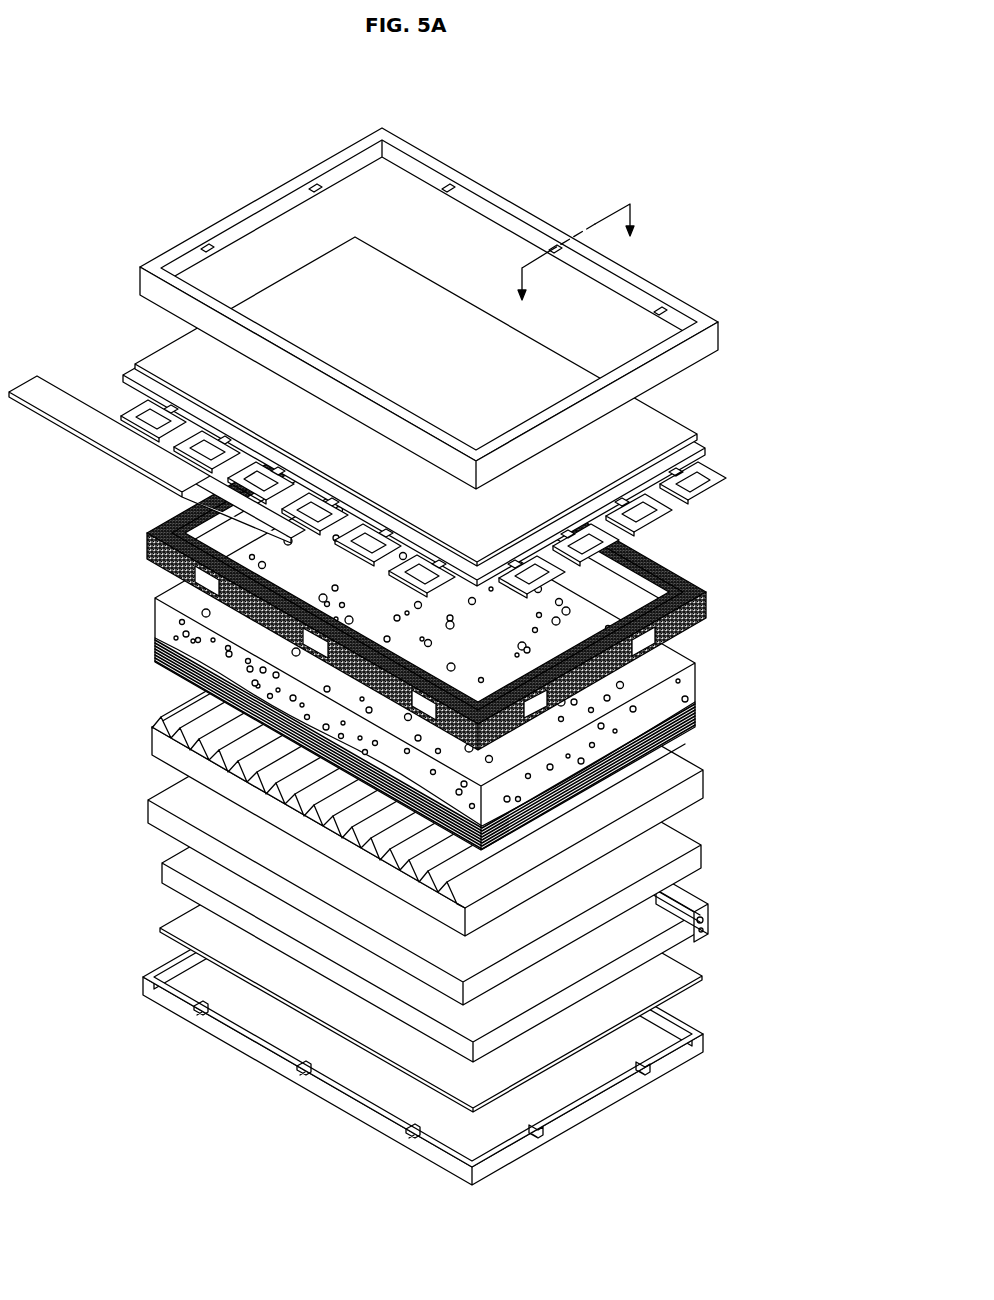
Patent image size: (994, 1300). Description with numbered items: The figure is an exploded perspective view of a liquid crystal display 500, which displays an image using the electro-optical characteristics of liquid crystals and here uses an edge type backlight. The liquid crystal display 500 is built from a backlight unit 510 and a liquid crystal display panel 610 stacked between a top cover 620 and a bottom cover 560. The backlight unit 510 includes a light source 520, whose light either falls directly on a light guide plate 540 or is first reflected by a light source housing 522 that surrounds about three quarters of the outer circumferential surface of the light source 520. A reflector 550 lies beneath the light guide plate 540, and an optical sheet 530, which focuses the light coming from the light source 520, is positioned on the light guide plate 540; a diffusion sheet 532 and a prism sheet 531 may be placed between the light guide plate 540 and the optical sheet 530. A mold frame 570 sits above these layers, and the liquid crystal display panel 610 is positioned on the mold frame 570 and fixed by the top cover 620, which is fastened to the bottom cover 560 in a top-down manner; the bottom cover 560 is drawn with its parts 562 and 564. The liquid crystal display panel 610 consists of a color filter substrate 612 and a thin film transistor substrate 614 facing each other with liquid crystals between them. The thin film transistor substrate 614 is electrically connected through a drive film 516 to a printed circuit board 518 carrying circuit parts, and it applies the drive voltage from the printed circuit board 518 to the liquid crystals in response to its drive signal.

The liquid crystal display 500 is at (606, 97).
The backlight unit 510 is at (782, 1032).
The drive film 516 is at (115, 384).
The printed circuit board 518 is at (97, 419).
The light source 520 is at (710, 922).
The light source housing 522 is at (690, 905).
The optical sheet 530 is at (151, 623).
The prism sheet 531 is at (152, 741).
The diffusion sheet 532 is at (148, 812).
The light guide plate 540 is at (162, 872).
The reflector 550 is at (160, 933).
The bottom cover 560 is at (670, 1096).
The bottom plate of bottom chassis 562 is at (598, 1078).
The side wall of bottom chassis 564 is at (595, 1105).
The mold frame 570 is at (710, 596).
The liquid crystal display panel 610 is at (786, 386).
The color filter substrate 612 is at (652, 425).
The thin film transistor substrate 614 is at (705, 455).
The top cover 620 is at (707, 322).